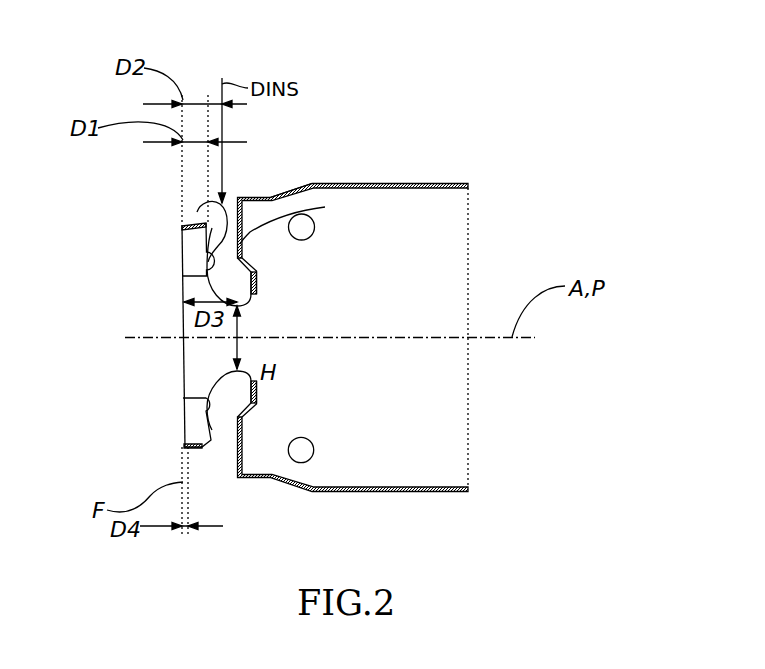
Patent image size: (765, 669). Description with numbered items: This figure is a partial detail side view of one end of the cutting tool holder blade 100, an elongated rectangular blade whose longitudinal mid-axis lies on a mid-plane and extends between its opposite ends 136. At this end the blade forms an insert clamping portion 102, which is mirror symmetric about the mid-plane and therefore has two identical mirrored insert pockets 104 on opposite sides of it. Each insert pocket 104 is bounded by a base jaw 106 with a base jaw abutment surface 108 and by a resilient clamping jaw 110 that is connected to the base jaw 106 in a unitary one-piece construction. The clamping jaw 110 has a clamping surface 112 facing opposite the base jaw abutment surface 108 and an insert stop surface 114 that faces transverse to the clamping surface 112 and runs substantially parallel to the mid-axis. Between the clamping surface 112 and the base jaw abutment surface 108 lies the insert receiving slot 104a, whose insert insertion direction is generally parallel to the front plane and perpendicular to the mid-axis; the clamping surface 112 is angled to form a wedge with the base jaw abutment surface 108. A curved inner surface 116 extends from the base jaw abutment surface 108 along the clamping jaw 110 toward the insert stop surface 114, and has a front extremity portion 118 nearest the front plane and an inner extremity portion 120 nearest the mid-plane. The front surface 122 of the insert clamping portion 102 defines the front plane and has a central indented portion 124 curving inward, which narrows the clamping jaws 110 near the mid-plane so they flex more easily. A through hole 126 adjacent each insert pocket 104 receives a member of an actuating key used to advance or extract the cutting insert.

The cutting tool holder blade 100 is at (436, 133).
The insert clamping portion 102 is at (132, 315).
The insert pocket 104 is at (230, 172).
The insert receiving slot 104a is at (308, 221).
The base jaw 106 is at (268, 206).
The base jaw abutment surface 108 is at (236, 198).
The clamping jaw 110 is at (187, 235).
The clamping surface 112 is at (190, 207).
The insert stop surface 114 is at (186, 222).
The curved inner surface 116 is at (259, 272).
The front extremity portion 118 is at (205, 268).
The inner extremity portion 120 is at (253, 280).
The front surface 122 is at (183, 430).
The central indented portion 124 is at (181, 336).
The through hole 126 is at (308, 233).
The opposite ends 136 is at (95, 333).